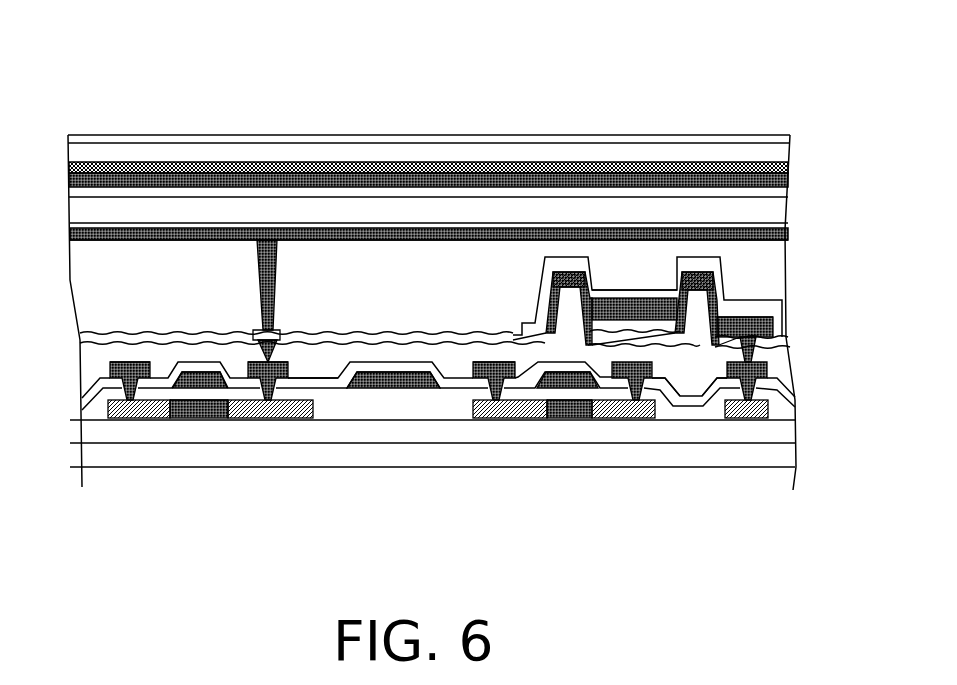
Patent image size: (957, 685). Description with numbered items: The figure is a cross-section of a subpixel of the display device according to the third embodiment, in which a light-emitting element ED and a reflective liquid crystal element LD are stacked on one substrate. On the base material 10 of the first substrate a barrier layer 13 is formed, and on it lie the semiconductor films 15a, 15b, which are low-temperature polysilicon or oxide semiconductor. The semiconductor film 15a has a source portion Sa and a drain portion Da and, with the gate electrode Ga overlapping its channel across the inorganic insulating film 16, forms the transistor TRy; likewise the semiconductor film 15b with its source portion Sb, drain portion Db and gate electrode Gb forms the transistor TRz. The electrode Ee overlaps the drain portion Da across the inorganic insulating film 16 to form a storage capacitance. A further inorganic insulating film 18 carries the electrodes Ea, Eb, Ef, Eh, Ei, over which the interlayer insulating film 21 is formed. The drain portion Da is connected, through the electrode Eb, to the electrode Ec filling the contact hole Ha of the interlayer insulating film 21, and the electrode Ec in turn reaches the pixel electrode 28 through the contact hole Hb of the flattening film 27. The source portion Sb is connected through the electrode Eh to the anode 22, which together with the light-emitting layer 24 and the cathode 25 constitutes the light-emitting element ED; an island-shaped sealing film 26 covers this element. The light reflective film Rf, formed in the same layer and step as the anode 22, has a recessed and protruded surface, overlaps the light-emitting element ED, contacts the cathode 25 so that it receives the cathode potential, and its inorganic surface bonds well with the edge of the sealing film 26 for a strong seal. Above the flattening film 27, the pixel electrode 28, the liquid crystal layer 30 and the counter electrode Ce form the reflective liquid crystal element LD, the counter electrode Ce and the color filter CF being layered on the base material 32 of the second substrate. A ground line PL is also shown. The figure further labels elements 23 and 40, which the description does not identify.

The base material 10 is at (80, 465).
The barrier layer 13 is at (80, 443).
The inorganic insulating film 16 is at (82, 418).
The inorganic insulating film 18 is at (83, 397).
The interlayer insulating film 21 is at (87, 355).
The anode 22 is at (644, 300).
The pixel defining layer 23 is at (568, 290).
The light-emitting layer 24 is at (599, 328).
The cathode 25 is at (620, 307).
The sealing film 26 is at (660, 296).
The flattening film 27 is at (78, 272).
The pixel electrode 28 is at (226, 236).
The liquid crystal layer 30 is at (80, 205).
The base material 32 is at (68, 152).
The upper substrate 40 is at (68, 138).
The color filter CF is at (68, 168).
The counter electrode Ce is at (68, 183).
The light reflective film Rf is at (80, 334).
The reflective liquid crystal element LD is at (182, 68).
The light-emitting element ED is at (593, 70).
The electrode Ea is at (131, 378).
The electrode Eb is at (247, 365).
The electrode Ec is at (314, 335).
The electrode Ee is at (398, 378).
The electrode Ef is at (499, 378).
The electrode Eh is at (648, 367).
The electrode Ei is at (725, 370).
The contact hole Ha is at (314, 378).
The contact hole Hb is at (270, 283).
The source portion Sa is at (130, 400).
The electrode Ga is at (182, 420).
The drain portion Da is at (268, 400).
The semiconductor film 15a is at (218, 424).
The drain portion Db is at (496, 400).
The electrode Gb is at (548, 420).
The source portion Sb is at (636, 400).
The semiconductor film 15b is at (580, 424).
The ground line PL is at (752, 400).
The transistor TRy is at (130, 514).
The transistor TRz is at (497, 514).